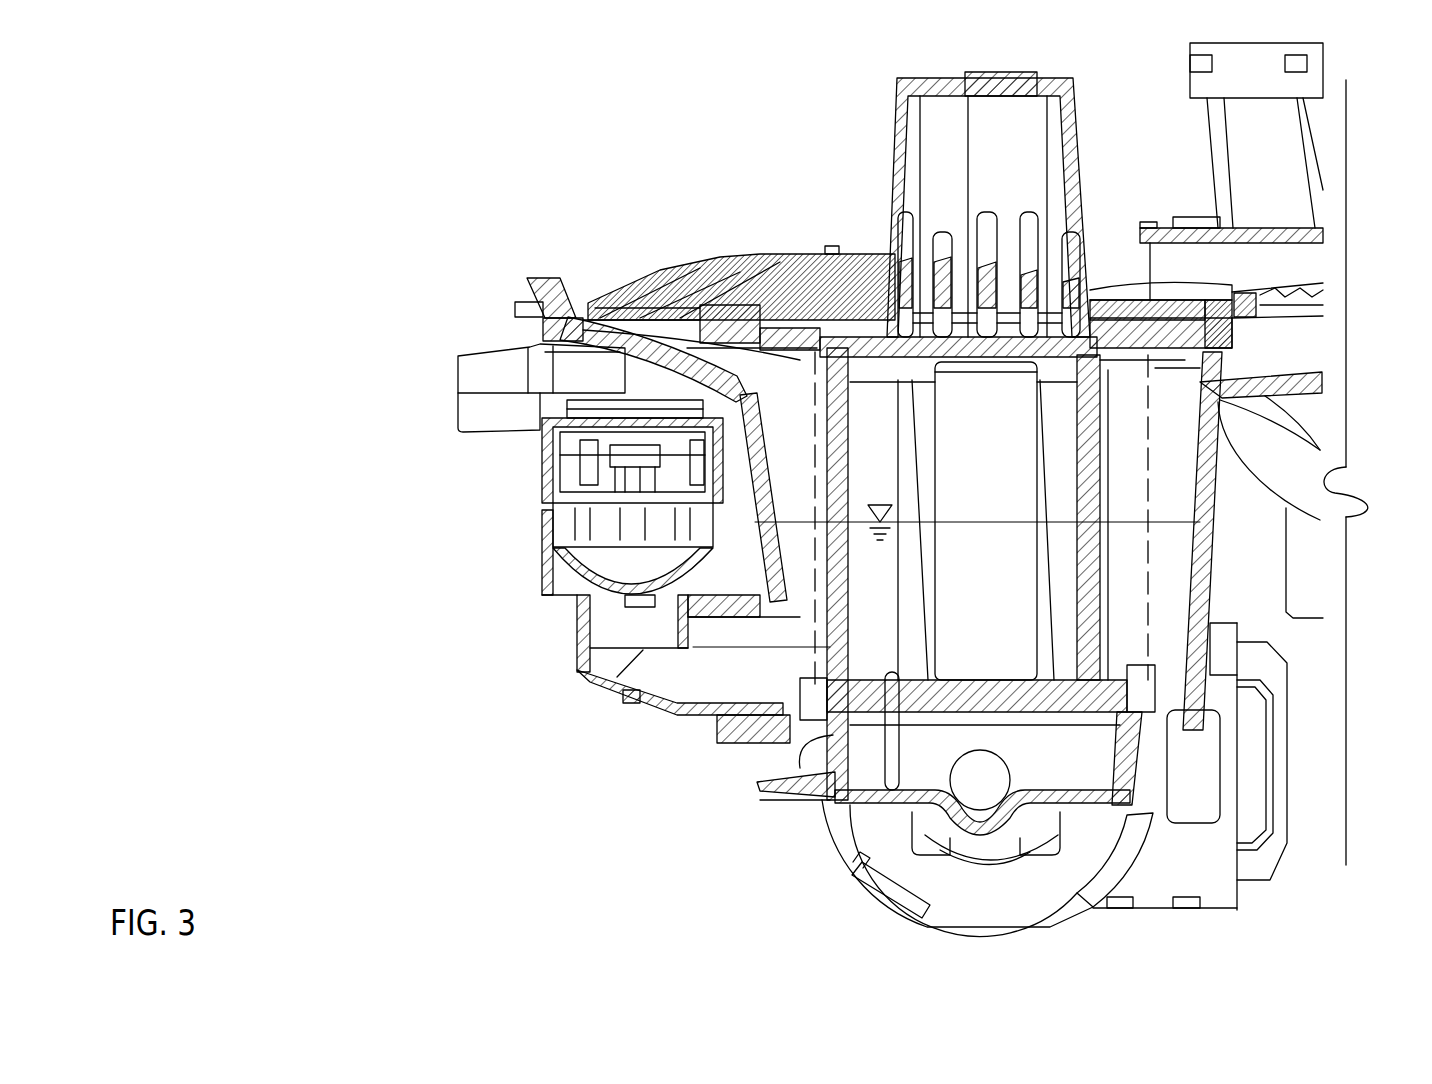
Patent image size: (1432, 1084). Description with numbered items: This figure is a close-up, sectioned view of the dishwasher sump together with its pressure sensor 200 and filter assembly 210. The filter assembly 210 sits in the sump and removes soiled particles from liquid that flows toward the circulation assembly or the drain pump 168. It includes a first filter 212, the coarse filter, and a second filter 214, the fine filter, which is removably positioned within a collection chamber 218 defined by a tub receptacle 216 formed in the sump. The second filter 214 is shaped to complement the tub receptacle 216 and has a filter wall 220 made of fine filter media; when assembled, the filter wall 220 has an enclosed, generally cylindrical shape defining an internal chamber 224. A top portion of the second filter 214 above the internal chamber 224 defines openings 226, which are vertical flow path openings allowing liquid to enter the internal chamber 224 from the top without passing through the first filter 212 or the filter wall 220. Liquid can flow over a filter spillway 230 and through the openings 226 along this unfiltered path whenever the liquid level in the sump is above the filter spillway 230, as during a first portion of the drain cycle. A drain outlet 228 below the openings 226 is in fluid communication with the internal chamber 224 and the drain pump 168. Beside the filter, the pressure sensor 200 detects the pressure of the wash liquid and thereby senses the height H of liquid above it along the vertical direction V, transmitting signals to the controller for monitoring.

The drain pump 168 is at (1222, 890).
The pressure sensor 200 is at (540, 457).
The filter assembly 210 is at (648, 135).
The first filter 212 is at (630, 228).
The second filter 214 is at (1183, 360).
The tub receptacle 216 is at (1205, 682).
The collection chamber 218 is at (1185, 608).
The filter wall 220 is at (1152, 495).
The internal chamber 224 is at (1007, 512).
The openings 226 is at (852, 305).
The drain outlet 228 is at (984, 815).
The filter spillway 230 is at (785, 302).
The height H is at (790, 538).
The vertical direction V is at (355, 258).